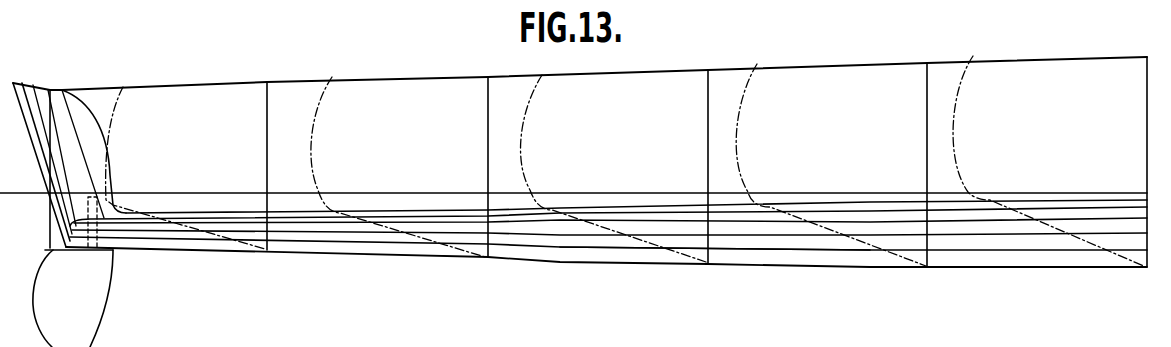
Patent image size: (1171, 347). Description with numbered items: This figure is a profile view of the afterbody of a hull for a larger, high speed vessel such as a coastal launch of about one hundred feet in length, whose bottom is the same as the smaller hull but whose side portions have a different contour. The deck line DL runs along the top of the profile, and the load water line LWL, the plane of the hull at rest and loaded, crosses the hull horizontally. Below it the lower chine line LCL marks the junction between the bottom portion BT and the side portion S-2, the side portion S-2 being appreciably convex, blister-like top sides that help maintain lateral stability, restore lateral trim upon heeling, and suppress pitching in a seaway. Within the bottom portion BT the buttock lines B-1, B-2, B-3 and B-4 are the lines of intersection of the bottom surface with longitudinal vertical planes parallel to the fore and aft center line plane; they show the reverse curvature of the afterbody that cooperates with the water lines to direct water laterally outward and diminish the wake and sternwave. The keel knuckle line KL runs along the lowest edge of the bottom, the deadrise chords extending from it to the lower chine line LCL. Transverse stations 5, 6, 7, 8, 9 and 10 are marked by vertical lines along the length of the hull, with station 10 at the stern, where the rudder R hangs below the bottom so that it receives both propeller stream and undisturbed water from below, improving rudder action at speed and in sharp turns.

The deck line DL is at (640, 70).
The load water line LWL is at (425, 190).
The lower chine line LCL is at (645, 205).
The bottom portion BT is at (572, 238).
The buttock line B-1 is at (740, 249).
The buttock line B-2 is at (792, 238).
The buttock line B-3 is at (958, 224).
The buttock line B-4 is at (1080, 206).
The keel knuckle line KL is at (837, 267).
The side portion S-2 is at (626, 161).
The rudder R is at (97, 322).
The station 5 is at (1147, 171).
The station 6 is at (928, 175).
The station 7 is at (708, 176).
The station 8 is at (489, 177).
The station 9 is at (268, 175).
The station 10 is at (45, 175).